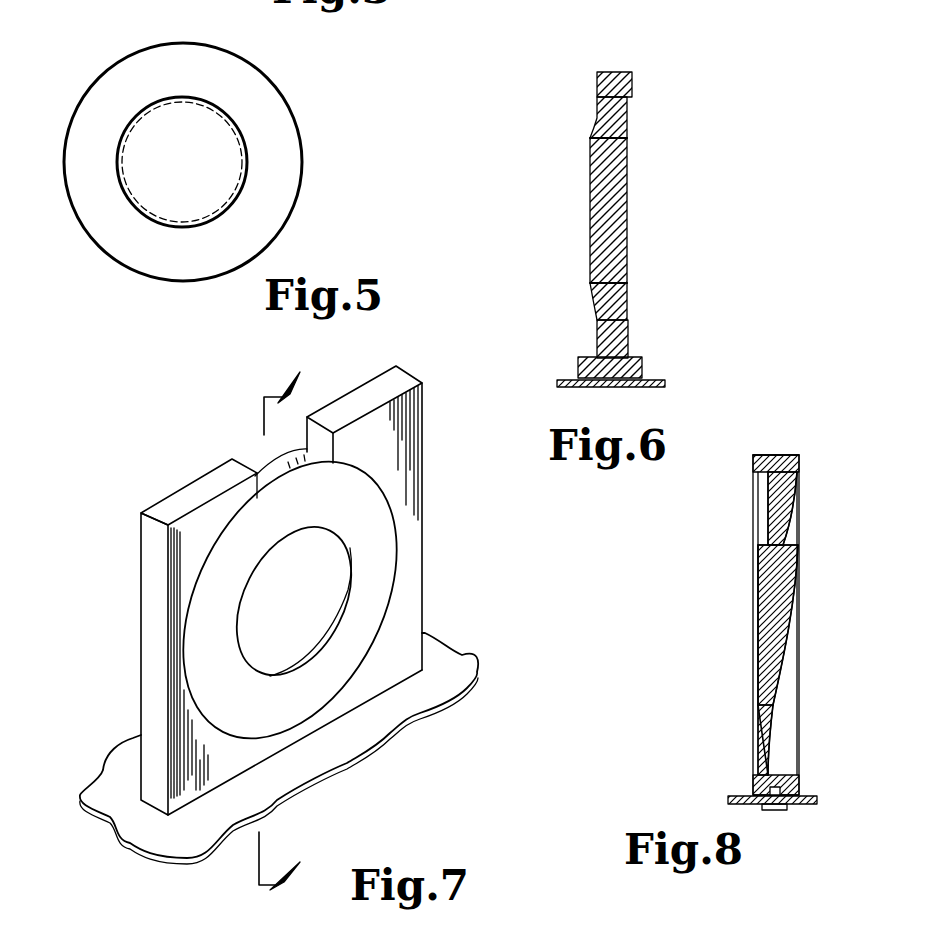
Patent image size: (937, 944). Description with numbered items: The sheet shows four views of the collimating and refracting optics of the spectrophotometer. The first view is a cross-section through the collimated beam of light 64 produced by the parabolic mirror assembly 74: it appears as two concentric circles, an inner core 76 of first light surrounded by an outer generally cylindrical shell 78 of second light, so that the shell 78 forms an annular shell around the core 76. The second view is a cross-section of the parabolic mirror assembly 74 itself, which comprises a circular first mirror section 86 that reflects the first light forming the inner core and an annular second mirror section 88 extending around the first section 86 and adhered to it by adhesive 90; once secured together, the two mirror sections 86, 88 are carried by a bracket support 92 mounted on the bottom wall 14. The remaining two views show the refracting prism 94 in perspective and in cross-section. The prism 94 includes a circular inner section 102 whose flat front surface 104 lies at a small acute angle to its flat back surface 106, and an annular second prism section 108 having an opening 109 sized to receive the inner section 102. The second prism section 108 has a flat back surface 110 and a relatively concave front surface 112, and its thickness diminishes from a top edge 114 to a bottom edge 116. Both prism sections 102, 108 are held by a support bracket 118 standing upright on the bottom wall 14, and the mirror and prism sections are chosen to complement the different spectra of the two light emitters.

In FIG. 6, the bottom wall 14 is at (620, 388).
In FIG. 7, the bottom wall 14 is at (453, 668).
In FIG. 8, the bottom wall 14 is at (752, 798).
In FIG. 5, the collimated beam of light 64 is at (178, 268).
In FIG. 5, the inner core 76 is at (228, 164).
In FIG. 5, the outer generally cylindrical shell 78 is at (262, 203).
In FIG. 6, the parabolic mirror assembly 74 is at (657, 113).
In FIG. 6, the first mirror section 86 is at (605, 190).
In FIG. 6, the second mirror section 88 is at (597, 113).
In FIG. 6, the adhesive 90 is at (607, 142).
In FIG. 6, the bracket support 92 is at (612, 72).
In FIG. 7, the refracting prism 94 is at (125, 633).
In FIG. 8, the refracting prism 94 is at (740, 667).
In FIG. 7, the circular inner section 102 is at (302, 607).
In FIG. 8, the circular inner section 102 is at (767, 608).
In FIG. 8, the flat front surface 104 is at (787, 625).
In FIG. 8, the flat back surface 106 is at (756, 568).
In FIG. 7, the second prism section 108 is at (236, 713).
In FIG. 8, the second prism section 108 is at (775, 520).
In FIG. 8, the opening 109 is at (785, 560).
In FIG. 8, the flat back surface 110 is at (768, 500).
In FIG. 7, the concave front surface 112 is at (380, 578).
In FIG. 8, the concave front surface 112 is at (790, 512).
In FIG. 7, the top edge 114 is at (258, 470).
In FIG. 8, the top edge 114 is at (777, 456).
In FIG. 7, the bottom edge 116 is at (283, 722).
In FIG. 8, the bottom edge 116 is at (757, 806).
In FIG. 7, the support bracket 118 is at (390, 432).
In FIG. 8, the support bracket 118 is at (792, 455).